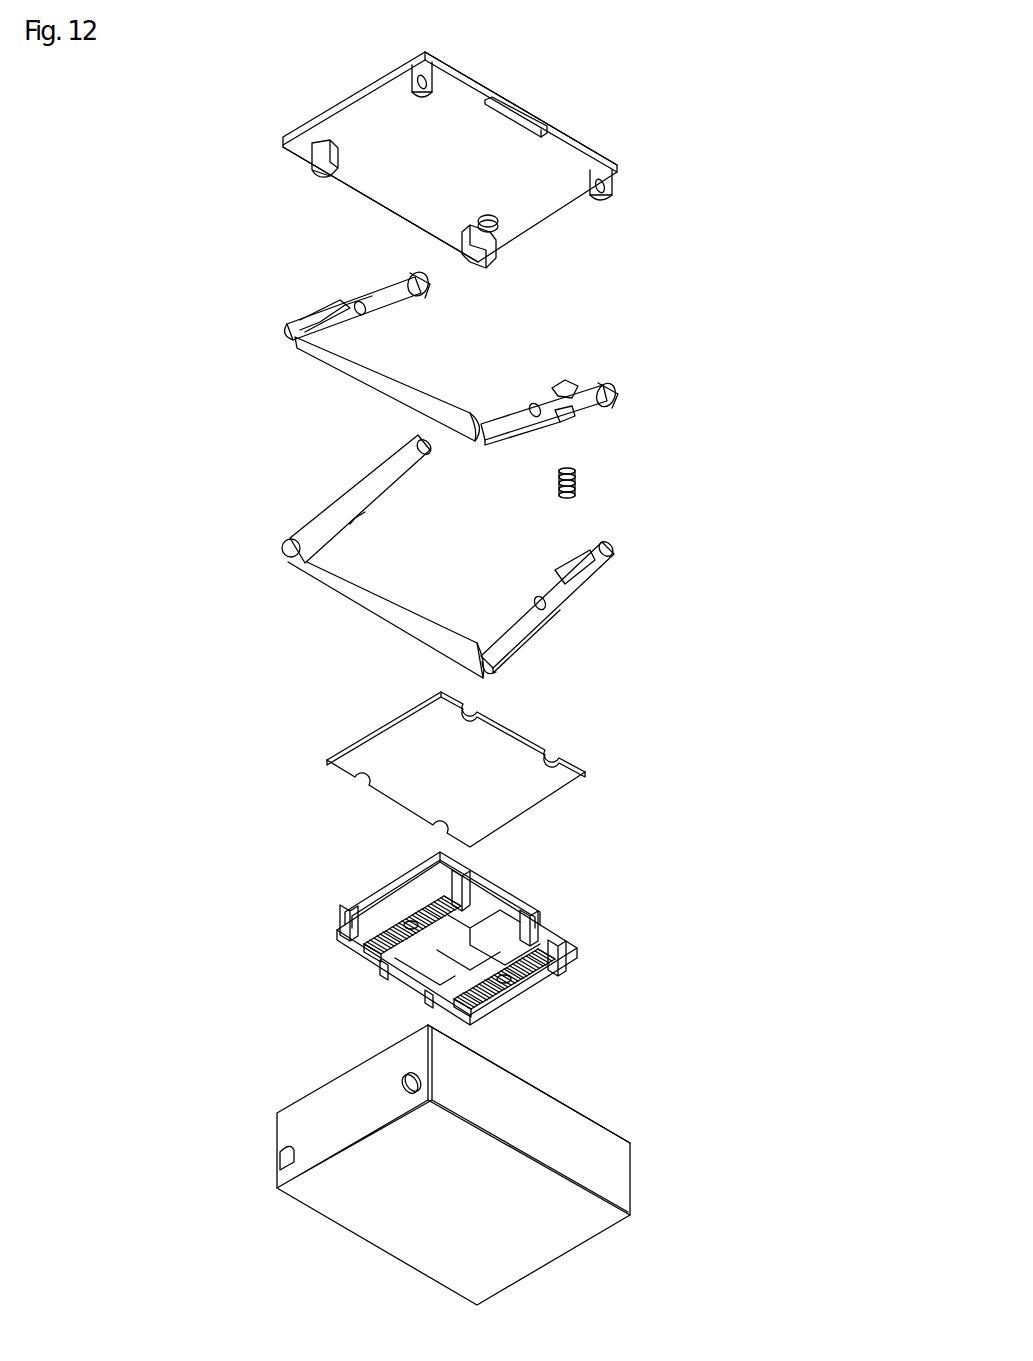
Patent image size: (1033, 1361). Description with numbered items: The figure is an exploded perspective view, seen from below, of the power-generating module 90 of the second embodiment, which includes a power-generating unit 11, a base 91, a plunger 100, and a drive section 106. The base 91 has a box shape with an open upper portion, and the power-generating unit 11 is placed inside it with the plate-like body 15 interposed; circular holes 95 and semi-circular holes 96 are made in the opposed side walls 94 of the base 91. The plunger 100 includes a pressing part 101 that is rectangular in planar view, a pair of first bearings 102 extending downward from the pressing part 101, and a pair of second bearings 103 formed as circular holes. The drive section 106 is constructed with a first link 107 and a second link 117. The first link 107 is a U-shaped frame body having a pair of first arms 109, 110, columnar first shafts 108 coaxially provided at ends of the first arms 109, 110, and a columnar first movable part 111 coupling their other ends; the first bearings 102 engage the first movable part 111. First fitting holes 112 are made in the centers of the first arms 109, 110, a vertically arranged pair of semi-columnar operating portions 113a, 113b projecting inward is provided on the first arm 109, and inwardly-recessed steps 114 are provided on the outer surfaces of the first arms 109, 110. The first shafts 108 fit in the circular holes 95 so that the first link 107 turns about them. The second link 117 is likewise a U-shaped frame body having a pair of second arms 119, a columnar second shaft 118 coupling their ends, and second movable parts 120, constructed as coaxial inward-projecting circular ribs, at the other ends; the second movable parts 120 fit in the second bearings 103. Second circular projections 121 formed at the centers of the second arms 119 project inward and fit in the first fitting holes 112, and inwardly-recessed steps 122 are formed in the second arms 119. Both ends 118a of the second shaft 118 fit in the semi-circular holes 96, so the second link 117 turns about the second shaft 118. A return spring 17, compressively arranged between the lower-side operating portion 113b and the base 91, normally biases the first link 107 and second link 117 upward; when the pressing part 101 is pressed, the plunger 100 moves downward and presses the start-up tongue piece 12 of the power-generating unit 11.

The power-generating module 90 is at (172, 147).
The plunger 100 is at (250, 112).
The pressing part 101 is at (573, 138).
The first bearings 102 is at (308, 177).
The second bearings 103 is at (408, 76).
The drive section 106 is at (178, 268).
The first link 107 is at (242, 315).
The first shafts 108 is at (410, 275).
The first arm 109 is at (505, 395).
The first arm 110 is at (318, 308).
The first movable part 111 is at (402, 370).
The first fitting holes 112 is at (342, 350).
The upper-side operating portion 113a is at (572, 382).
The lower-side operating portion 113b is at (565, 418).
The inwardly-recessed steps 114 is at (295, 337).
The second link 117 is at (255, 515).
The second shaft 118 is at (365, 610).
The ends of second shaft 118a is at (282, 545).
The second arms 119 is at (348, 492).
The second movable parts 120 is at (432, 452).
The second circular projections 121 is at (535, 597).
The inwardly-recessed steps 122 is at (560, 590).
The return spring 17 is at (580, 486).
The plate-like body 15 is at (372, 722).
The power-generating unit 11 is at (380, 882).
The start-up tongue piece 12 is at (565, 972).
The base 91 is at (258, 1056).
The side walls 94 is at (352, 1068).
The circular holes 95 is at (422, 1087).
The semi-circular holes 96 is at (283, 1150).